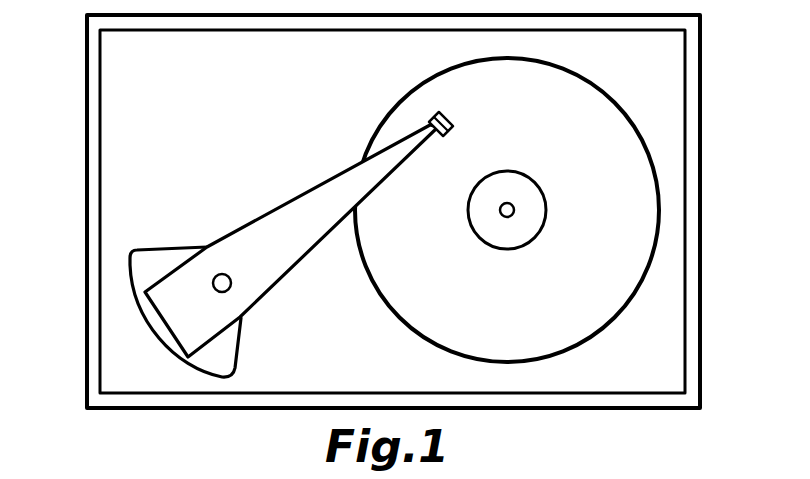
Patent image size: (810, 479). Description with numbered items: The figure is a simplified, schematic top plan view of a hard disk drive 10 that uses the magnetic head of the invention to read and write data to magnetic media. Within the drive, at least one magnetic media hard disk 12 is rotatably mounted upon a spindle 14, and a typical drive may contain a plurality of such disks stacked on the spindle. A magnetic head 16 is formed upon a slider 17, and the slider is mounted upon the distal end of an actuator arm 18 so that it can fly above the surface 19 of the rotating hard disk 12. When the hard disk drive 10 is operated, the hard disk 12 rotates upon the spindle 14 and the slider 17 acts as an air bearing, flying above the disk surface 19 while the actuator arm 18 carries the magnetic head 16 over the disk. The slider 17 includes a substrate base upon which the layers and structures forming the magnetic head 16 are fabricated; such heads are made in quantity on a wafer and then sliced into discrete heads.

The hard disk drive 10 is at (85, 150).
The hard disk 12 is at (416, 328).
The spindle 14 is at (541, 212).
The magnetic head 16 is at (449, 116).
The slider 17 is at (447, 136).
The actuator arm 18 is at (293, 198).
The surface 19 is at (398, 261).